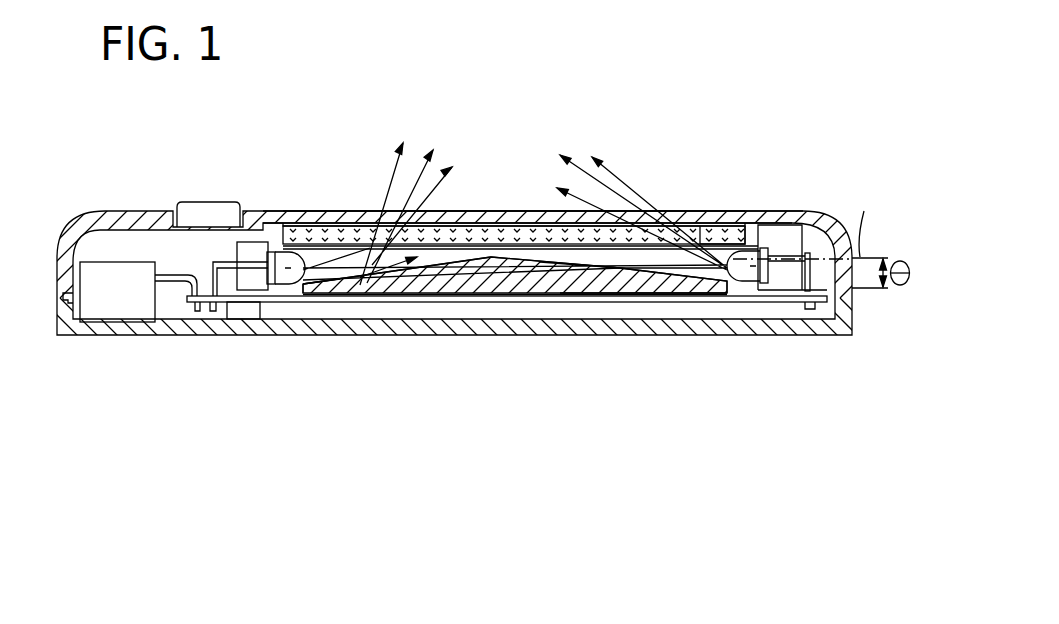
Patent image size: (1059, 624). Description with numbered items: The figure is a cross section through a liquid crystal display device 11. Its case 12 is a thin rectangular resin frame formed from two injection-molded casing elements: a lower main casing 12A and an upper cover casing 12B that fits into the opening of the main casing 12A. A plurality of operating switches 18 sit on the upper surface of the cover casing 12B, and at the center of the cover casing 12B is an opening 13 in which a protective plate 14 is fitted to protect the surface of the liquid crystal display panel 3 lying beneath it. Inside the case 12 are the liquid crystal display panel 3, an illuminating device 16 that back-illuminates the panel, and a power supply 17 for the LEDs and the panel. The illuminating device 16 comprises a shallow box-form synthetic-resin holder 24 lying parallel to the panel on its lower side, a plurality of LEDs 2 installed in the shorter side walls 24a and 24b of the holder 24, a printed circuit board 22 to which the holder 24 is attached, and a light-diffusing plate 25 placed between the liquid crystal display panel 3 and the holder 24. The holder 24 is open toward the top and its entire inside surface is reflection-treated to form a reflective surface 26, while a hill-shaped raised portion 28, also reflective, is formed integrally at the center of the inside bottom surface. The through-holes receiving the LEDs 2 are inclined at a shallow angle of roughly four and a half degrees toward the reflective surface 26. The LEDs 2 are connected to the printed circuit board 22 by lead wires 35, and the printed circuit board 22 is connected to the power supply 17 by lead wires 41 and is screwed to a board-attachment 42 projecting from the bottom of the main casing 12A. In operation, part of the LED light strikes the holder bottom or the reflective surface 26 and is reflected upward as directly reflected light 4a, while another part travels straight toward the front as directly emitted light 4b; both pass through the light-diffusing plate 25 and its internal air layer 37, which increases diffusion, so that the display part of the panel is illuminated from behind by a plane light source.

The liquid crystal display device 11 is at (253, 140).
The case 12 is at (22, 412).
The main casing 12A is at (57, 318).
The cover casing 12B is at (58, 288).
The opening 13 is at (337, 212).
The protective plate 14 is at (497, 210).
The illuminating device 16 is at (352, 303).
The power supply 17 is at (143, 307).
The operating switches 18 is at (205, 207).
The LED 2 is at (290, 283).
The printed circuit board 22 is at (577, 301).
The holder 24 is at (492, 298).
The side wall 24a is at (277, 221).
The side wall 24b is at (742, 250).
The light-diffusing plate 25 is at (710, 240).
The reflective surface 26 is at (442, 253).
The raised portion 28 is at (430, 285).
The liquid crystal display panel 3 is at (652, 220).
The lead wires 35 is at (810, 243).
The air layer 37 is at (527, 210).
The directly reflected light 4a is at (620, 282).
The directly emitted light 4b is at (708, 242).
The lead wires 41 is at (197, 320).
The board-attachment 42 is at (247, 315).